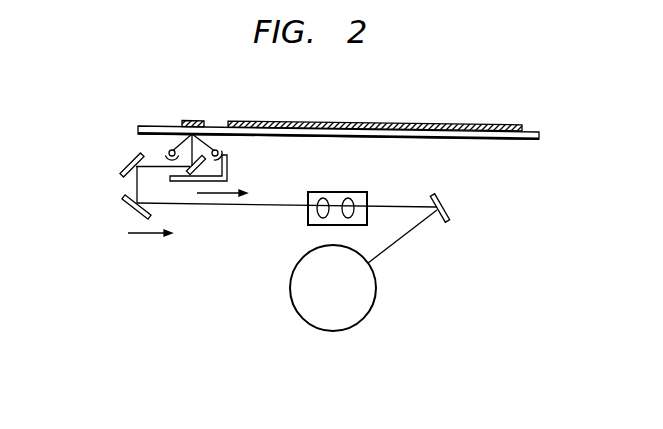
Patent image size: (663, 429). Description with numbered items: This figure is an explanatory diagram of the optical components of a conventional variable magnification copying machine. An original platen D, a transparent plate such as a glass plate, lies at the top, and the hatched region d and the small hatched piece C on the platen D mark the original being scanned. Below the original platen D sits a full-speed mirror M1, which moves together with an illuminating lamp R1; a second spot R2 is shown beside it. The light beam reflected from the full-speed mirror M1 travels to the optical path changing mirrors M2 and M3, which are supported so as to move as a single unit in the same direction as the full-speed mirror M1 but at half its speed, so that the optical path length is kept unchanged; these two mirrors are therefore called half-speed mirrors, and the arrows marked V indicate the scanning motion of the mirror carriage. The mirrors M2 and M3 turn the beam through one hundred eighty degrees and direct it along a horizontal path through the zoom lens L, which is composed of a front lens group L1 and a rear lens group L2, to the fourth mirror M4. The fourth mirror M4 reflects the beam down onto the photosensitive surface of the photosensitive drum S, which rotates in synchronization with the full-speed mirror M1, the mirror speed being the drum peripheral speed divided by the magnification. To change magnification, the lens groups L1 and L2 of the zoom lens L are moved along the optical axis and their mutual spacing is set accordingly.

The original platen D is at (540, 136).
The recorded data track region d is at (504, 124).
The recording cell C is at (197, 120).
The full-speed mirror M1 is at (191, 161).
The optical path changing mirror M2 is at (121, 165).
The optical path changing mirror M3 is at (123, 200).
The fourth mirror M4 is at (444, 200).
The illuminating lamp R1 is at (221, 152).
The second beam spot / receiver R2 is at (166, 152).
The velocity of mirror carriage V is at (230, 194).
The zoom lens L is at (302, 229).
The front lens group L1 is at (322, 198).
The rear lens group L2 is at (350, 198).
The photosensitive drum S is at (375, 294).